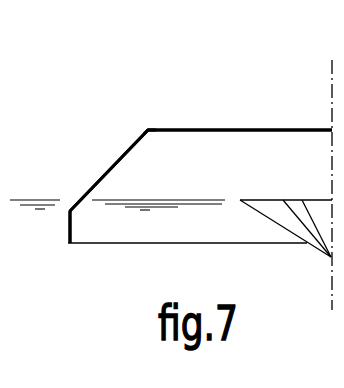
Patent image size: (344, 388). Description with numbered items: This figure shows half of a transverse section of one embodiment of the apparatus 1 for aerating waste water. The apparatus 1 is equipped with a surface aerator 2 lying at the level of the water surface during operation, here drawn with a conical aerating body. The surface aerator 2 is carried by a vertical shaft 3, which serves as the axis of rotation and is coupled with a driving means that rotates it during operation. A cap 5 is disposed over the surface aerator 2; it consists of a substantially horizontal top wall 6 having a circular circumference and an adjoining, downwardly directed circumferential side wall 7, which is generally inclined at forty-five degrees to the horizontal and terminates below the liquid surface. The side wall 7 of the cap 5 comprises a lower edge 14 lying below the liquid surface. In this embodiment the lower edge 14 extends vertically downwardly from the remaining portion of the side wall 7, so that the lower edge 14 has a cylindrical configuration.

The apparatus 1 is at (100, 146).
The surface aerator 2 is at (291, 225).
The vertical shaft 3 is at (331, 108).
The cap 5 is at (170, 122).
The top wall 6 is at (230, 128).
The side wall 7 is at (128, 150).
The lower edge 14 is at (65, 240).